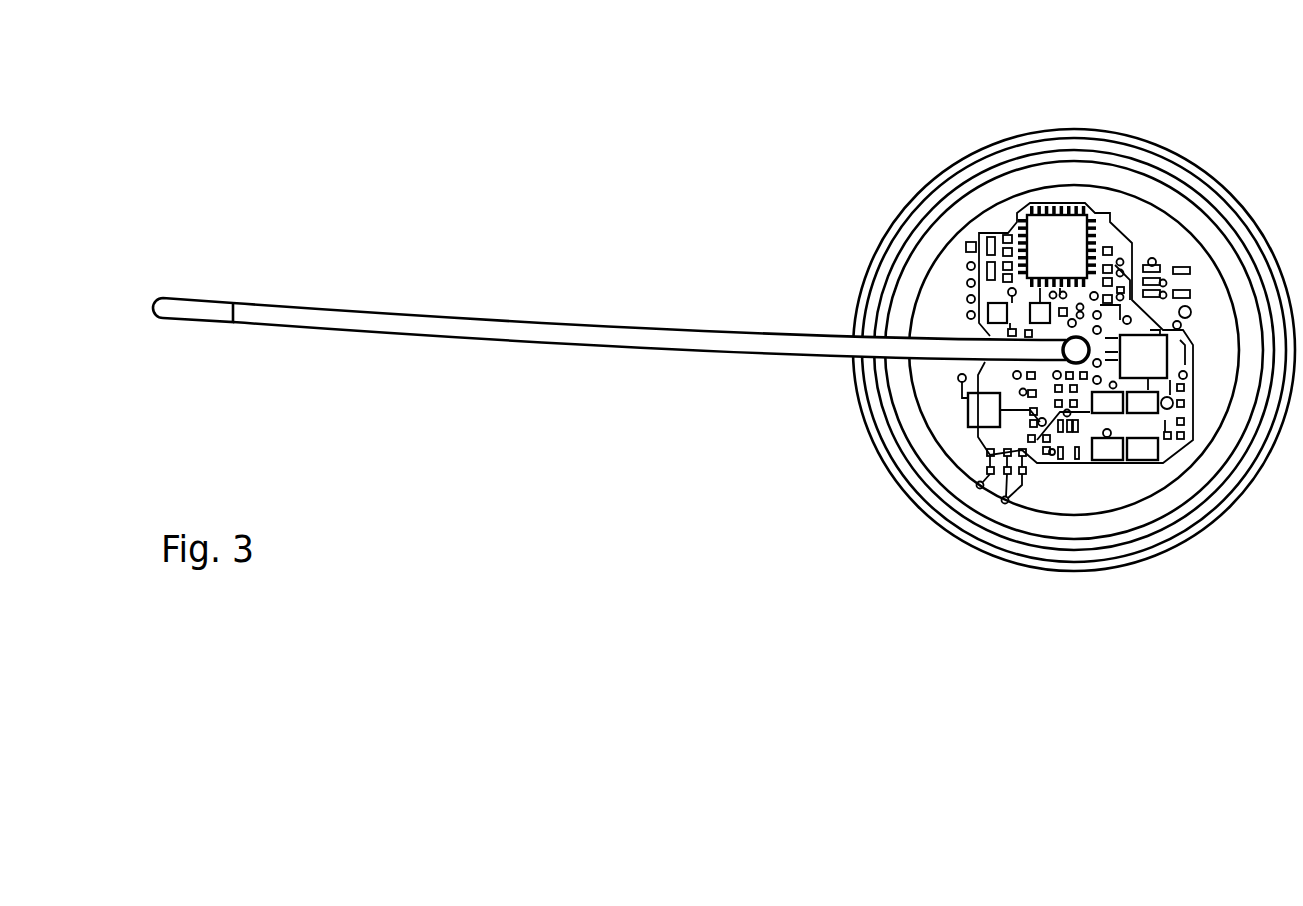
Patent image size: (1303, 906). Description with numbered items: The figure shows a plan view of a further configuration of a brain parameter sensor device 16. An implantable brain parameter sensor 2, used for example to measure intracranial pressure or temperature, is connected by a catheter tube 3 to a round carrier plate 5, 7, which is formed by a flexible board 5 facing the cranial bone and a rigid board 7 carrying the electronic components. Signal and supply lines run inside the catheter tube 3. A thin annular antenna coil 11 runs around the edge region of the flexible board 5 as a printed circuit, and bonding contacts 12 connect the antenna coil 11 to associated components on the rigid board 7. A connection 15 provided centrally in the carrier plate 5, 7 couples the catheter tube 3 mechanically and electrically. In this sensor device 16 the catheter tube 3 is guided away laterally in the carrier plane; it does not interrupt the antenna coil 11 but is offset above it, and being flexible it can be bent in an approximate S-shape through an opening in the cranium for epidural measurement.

The brain parameter sensor 2 is at (188, 307).
The catheter tube 3 is at (455, 327).
The flexible board 5 is at (1074, 348).
The rigid board 7 is at (1074, 348).
The antenna coil 11 is at (1200, 193).
The bonding contacts 12 is at (980, 489).
The connection 15 is at (1063, 313).
The brain parameter sensor device 16 is at (1074, 304).